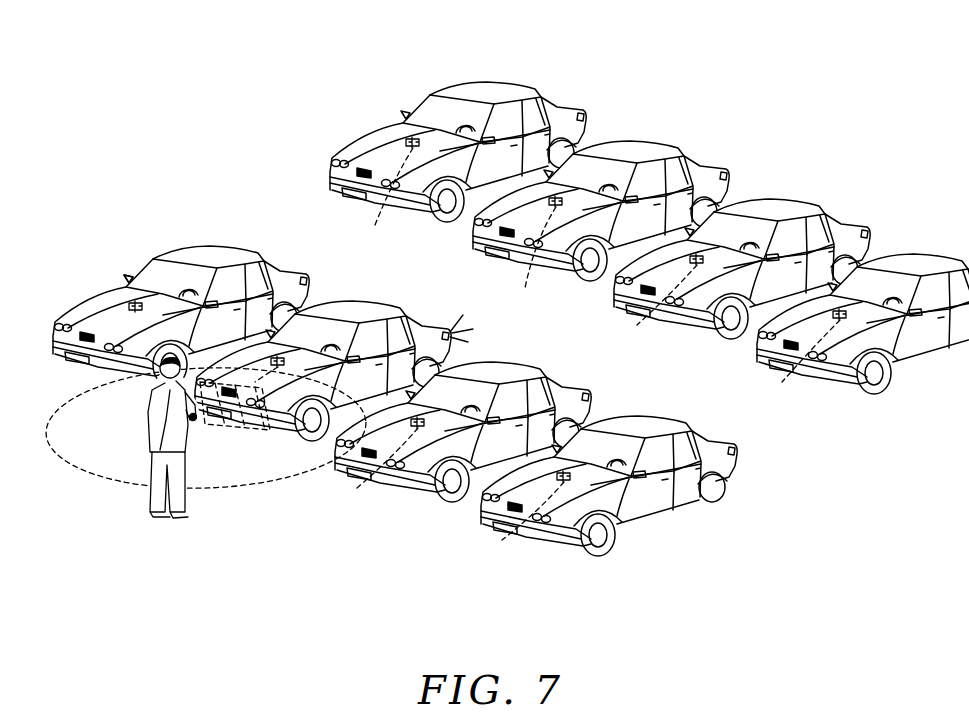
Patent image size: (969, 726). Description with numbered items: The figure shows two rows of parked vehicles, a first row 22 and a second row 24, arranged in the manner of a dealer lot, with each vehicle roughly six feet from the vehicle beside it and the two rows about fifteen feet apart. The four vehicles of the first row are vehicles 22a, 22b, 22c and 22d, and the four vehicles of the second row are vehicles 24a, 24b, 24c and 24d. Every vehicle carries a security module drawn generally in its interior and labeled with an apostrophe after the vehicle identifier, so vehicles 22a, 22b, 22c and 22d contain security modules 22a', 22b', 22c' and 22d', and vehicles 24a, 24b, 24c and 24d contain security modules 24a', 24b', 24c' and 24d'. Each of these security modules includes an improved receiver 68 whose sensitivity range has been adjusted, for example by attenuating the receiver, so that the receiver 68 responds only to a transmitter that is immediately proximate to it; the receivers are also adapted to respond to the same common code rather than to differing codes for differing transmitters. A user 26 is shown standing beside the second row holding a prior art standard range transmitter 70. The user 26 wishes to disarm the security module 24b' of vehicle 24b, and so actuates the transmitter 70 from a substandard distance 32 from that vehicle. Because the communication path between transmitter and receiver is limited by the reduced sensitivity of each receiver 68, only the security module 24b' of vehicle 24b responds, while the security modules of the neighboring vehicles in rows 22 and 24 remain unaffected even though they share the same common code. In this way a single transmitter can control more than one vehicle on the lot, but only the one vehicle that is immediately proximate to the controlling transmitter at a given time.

The row of vehicles 22 is at (649, 225).
The vehicle 22a is at (458, 144).
The vehicle 22b is at (601, 205).
The vehicle 22c is at (733, 252).
The vehicle 22d is at (852, 342).
The security module 22a' is at (380, 200).
The security module 22b' is at (523, 261).
The security module 22c' is at (647, 308).
The security module 22d' is at (787, 363).
The row of vehicles 24 is at (395, 388).
The vehicle 24a is at (181, 293).
The vehicle 24b is at (334, 372).
The vehicle 24c is at (460, 448).
The vehicle 24d is at (596, 502).
The security module 24a' is at (96, 264).
The security module 24b' is at (244, 420).
The security module 24c' is at (374, 467).
The security module 24d' is at (509, 523).
The user 26 is at (150, 406).
The substandard distance 32 is at (238, 487).
The improved receiver 68 is at (420, 419).
The transmitter 70 is at (197, 419).